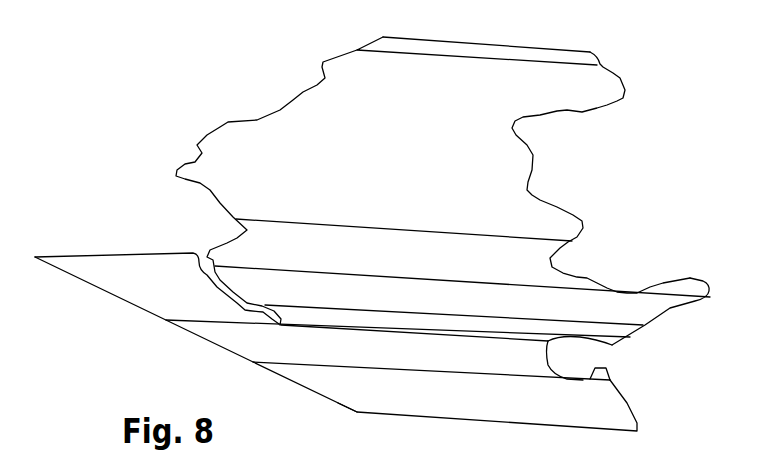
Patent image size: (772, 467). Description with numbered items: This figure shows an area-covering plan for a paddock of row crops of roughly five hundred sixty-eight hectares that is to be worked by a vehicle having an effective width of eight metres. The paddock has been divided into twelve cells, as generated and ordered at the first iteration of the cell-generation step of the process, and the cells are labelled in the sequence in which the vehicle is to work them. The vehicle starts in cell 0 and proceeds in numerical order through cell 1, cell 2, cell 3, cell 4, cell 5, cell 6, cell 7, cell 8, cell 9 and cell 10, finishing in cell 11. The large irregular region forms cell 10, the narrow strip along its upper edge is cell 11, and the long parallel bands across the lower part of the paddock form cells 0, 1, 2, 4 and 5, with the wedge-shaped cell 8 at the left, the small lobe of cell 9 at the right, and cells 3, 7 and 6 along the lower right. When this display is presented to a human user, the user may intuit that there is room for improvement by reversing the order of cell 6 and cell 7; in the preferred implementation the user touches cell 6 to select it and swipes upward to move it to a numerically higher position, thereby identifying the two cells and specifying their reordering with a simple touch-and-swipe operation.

The cell 0 is at (404, 241).
The cell 1 is at (462, 289).
The cell 2 is at (513, 328).
The cell 3 is at (612, 345).
The cell 4 is at (330, 328).
The cell 5 is at (414, 346).
The cell 6 is at (445, 396).
The cell 7 is at (610, 373).
The cell 8 is at (196, 332).
The cell 9 is at (693, 283).
The cell 10 is at (417, 153).
The cell 11 is at (508, 52).